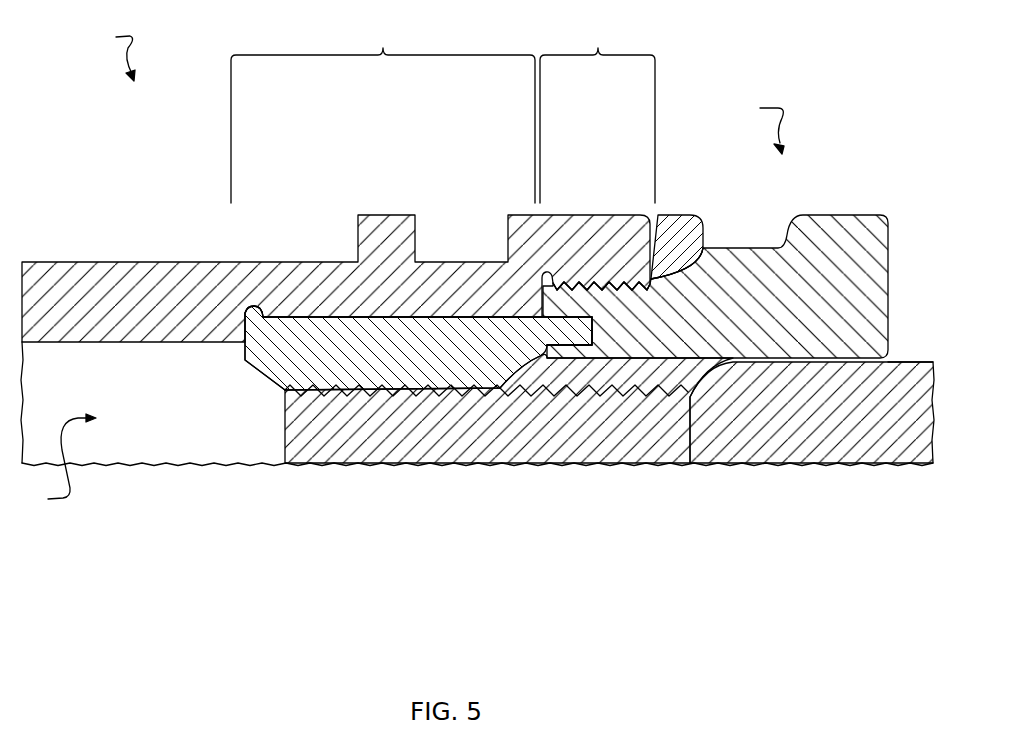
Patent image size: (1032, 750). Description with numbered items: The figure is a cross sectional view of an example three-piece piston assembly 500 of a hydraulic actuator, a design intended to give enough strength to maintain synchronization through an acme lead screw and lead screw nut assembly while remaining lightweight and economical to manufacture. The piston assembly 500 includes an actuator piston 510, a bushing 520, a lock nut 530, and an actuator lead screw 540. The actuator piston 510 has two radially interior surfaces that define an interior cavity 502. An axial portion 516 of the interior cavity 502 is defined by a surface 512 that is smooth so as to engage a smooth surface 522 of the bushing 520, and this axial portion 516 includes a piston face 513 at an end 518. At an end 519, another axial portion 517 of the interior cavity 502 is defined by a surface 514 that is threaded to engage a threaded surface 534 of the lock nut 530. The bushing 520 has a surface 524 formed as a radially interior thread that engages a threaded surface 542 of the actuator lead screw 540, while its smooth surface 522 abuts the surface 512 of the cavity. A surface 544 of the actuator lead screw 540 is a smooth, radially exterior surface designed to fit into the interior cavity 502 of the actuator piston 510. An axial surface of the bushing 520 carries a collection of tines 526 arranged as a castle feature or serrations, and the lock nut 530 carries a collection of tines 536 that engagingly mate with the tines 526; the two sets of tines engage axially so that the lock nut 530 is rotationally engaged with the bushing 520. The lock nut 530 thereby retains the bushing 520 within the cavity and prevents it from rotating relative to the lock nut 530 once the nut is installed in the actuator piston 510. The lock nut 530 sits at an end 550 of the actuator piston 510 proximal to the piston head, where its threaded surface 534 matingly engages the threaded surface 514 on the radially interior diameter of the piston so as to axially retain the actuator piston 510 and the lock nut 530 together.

The three-piece piston assembly 500 is at (109, 56).
The interior cavity 502 is at (56, 429).
The actuator piston 510 is at (107, 262).
The surface 512 is at (307, 320).
The piston face 513 is at (727, 230).
The threaded surface 514 is at (627, 283).
The axial portion 516 is at (597, 111).
The axial portion 517 is at (383, 111).
The end 518 is at (703, 248).
The end 519 is at (545, 330).
The bushing 520 is at (253, 362).
The smooth surface 522 is at (333, 317).
The surface 524 is at (398, 392).
The tines 526 is at (628, 430).
The lock nut 530 is at (820, 215).
The threaded surface 534 is at (648, 278).
The tines 536 is at (582, 345).
The actuator lead screw 540 is at (838, 453).
The threaded surface 542 is at (617, 400).
The surface 544 is at (915, 362).
The end 550 is at (756, 128).